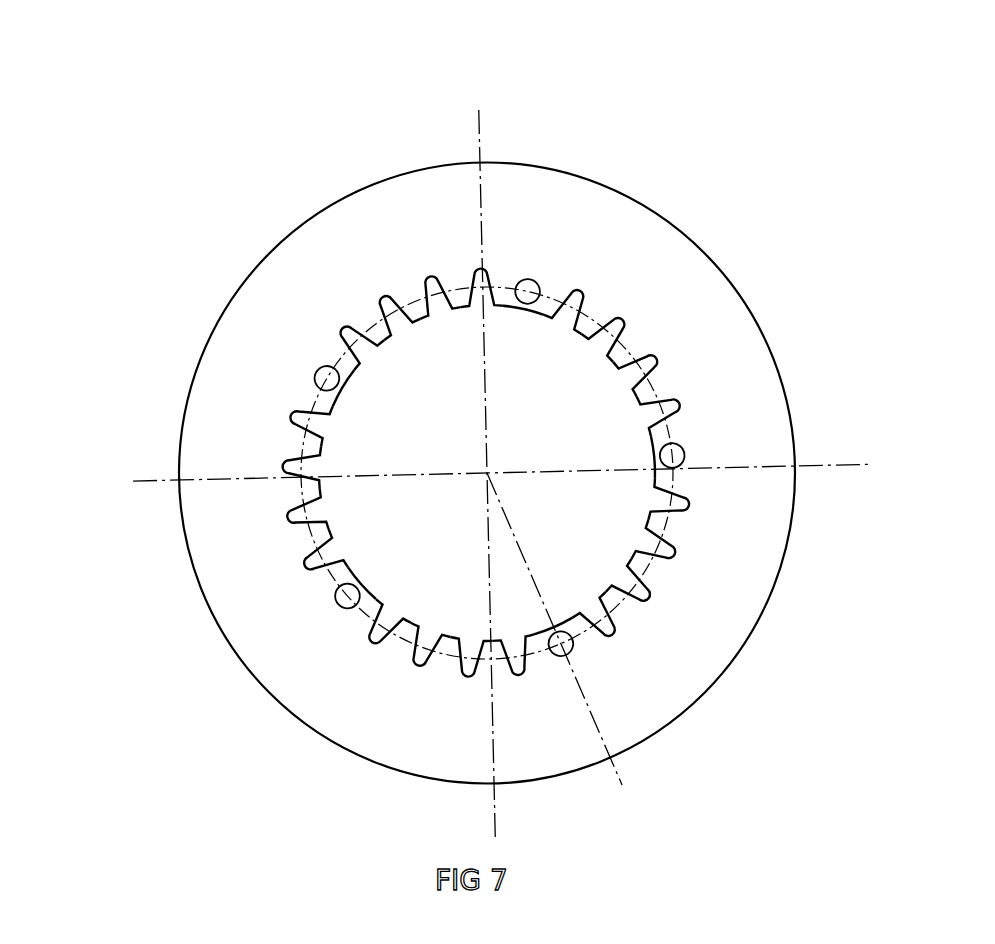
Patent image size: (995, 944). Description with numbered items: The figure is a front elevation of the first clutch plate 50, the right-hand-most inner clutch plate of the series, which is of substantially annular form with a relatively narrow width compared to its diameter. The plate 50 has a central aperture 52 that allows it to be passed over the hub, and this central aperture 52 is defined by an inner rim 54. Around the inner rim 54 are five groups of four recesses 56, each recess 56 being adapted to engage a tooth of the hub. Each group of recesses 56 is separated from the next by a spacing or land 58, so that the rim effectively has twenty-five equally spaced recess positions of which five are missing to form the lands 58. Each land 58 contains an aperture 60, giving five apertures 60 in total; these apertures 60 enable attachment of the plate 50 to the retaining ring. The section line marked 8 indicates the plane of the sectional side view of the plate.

The section line 8- 8 is at (628, 806).
The first clutch plate 50 is at (170, 592).
The central aperture 52 is at (441, 452).
The inner rim 54 is at (655, 477).
The recesses 56 is at (362, 327).
The land 58 is at (536, 637).
The aperture 60 is at (532, 290).